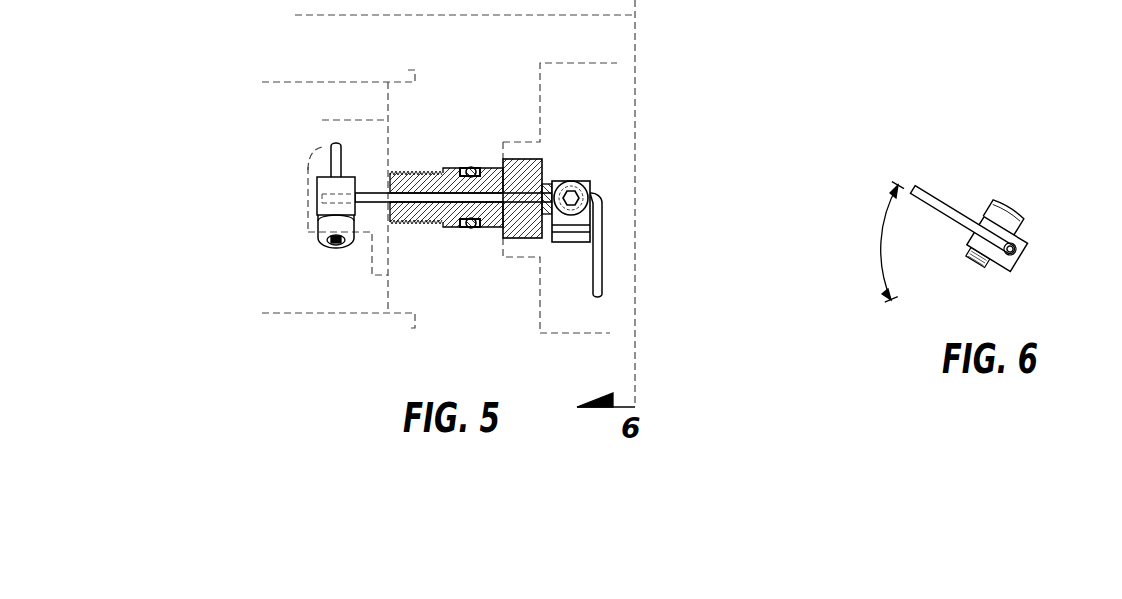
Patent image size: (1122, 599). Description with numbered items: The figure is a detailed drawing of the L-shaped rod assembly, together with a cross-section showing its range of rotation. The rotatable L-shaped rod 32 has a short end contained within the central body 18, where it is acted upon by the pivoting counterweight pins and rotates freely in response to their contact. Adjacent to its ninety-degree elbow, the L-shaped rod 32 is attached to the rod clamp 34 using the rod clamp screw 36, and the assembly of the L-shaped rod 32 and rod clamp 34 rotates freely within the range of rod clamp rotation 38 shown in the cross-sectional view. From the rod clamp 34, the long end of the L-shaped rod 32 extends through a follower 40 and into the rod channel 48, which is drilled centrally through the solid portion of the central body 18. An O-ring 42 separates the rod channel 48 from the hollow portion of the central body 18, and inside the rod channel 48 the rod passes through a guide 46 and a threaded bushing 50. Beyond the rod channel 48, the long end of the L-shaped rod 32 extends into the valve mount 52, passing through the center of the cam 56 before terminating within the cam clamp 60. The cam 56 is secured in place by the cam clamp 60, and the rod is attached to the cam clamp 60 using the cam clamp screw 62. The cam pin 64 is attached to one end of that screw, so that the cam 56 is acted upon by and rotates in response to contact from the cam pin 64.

In FIG. 5, the central body 18 is at (538, 382).
In FIG. 5, the L-shaped rod 32 is at (598, 257).
In FIG. 5, the rod clamp 34 is at (592, 183).
In FIG. 5, the rod clamp screw 36 is at (570, 183).
In FIG. 6, the range of rod clamp rotation 38 is at (878, 238).
In FIG. 5, the follower 40 is at (550, 180).
In FIG. 5, the O-ring 42 is at (469, 167).
In FIG. 5, the guide 46 is at (452, 220).
In FIG. 5, the rod channel 48 is at (412, 222).
In FIG. 5, the threaded bushing 50 is at (415, 177).
In FIG. 5, the valve mount 52 is at (350, 383).
In FIG. 5, the cam 56 is at (348, 120).
In FIG. 5, the cam clamp 60 is at (322, 185).
In FIG. 5, the cam clamp screw 62 is at (320, 242).
In FIG. 5, the cam pin 64 is at (335, 155).